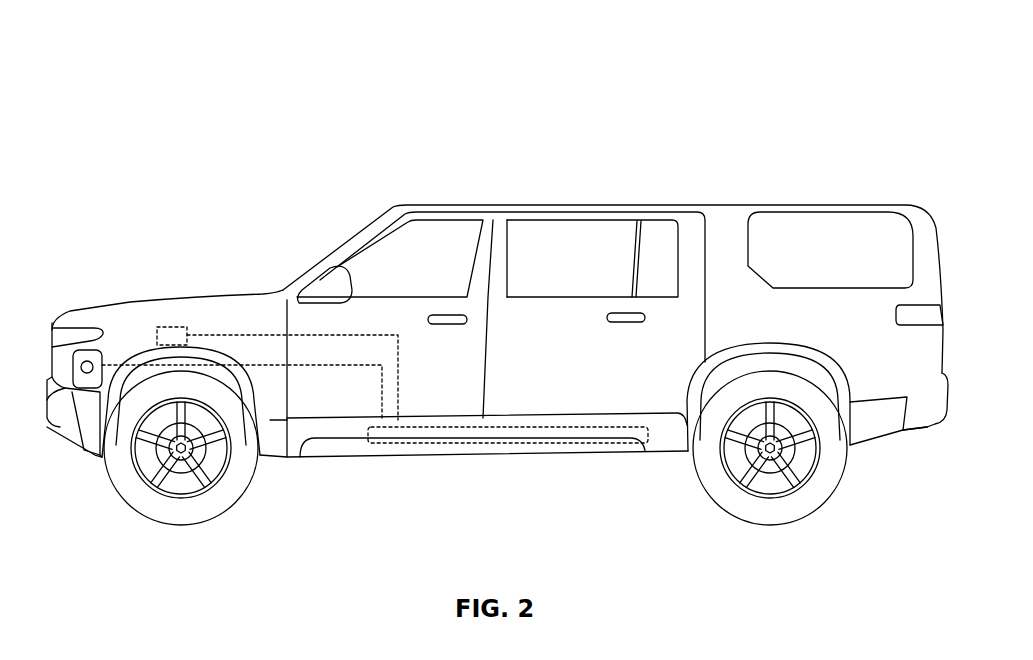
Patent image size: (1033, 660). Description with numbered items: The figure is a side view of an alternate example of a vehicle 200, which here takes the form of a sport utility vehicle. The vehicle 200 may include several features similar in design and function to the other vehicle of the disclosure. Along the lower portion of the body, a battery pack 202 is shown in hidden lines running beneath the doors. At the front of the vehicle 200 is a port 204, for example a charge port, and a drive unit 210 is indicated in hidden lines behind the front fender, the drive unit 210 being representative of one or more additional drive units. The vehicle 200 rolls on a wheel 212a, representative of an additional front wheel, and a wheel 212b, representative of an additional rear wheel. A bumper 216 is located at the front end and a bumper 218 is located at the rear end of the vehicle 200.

The vehicle 200 is at (156, 118).
The battery pack 202 is at (355, 445).
The port 204 is at (85, 360).
The drive unit 210 is at (172, 326).
The wheel 212a is at (106, 470).
The wheel 212b is at (848, 467).
The bumper 216 is at (50, 430).
The bumper 218 is at (922, 430).